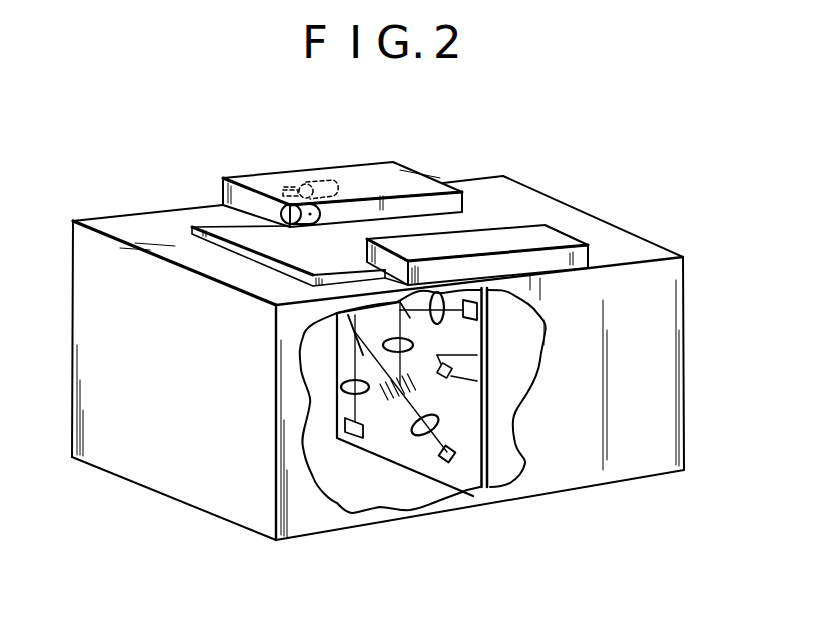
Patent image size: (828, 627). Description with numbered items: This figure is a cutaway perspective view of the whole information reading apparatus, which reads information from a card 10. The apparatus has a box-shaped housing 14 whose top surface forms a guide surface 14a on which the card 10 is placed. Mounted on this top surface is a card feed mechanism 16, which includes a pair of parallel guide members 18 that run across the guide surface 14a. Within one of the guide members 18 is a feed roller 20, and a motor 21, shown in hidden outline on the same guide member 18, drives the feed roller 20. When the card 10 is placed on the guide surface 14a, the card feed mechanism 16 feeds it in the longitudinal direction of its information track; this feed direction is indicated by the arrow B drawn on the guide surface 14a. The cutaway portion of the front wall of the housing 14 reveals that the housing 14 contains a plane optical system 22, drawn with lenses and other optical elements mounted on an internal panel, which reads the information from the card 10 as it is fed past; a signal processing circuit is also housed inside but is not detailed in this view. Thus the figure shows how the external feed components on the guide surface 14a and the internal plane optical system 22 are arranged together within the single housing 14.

The card 10 is at (447, 222).
The housing 14 is at (636, 219).
The guide surface 14a is at (160, 232).
The card feed mechanism 16 is at (452, 160).
The guide members 18 is at (372, 170).
The feed roller 20 is at (287, 204).
The motor 21 is at (320, 186).
The plane optical system 22 is at (513, 418).
The direction of movement B is at (265, 247).